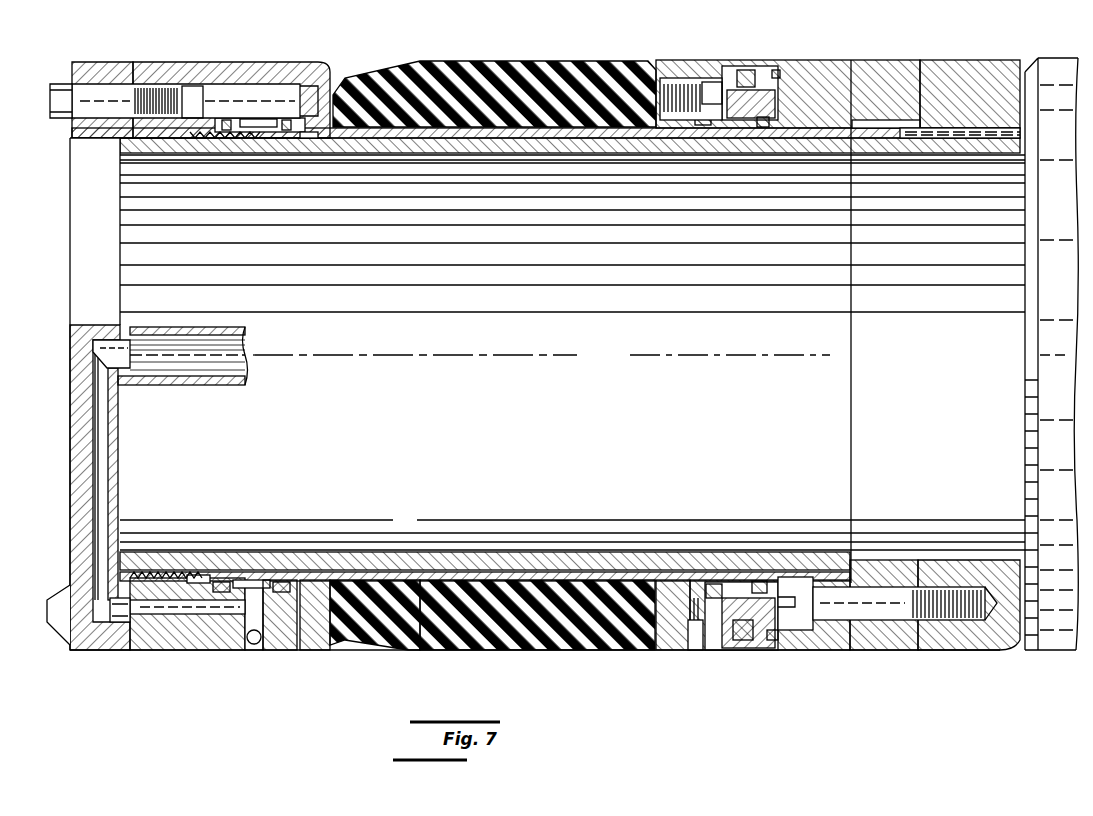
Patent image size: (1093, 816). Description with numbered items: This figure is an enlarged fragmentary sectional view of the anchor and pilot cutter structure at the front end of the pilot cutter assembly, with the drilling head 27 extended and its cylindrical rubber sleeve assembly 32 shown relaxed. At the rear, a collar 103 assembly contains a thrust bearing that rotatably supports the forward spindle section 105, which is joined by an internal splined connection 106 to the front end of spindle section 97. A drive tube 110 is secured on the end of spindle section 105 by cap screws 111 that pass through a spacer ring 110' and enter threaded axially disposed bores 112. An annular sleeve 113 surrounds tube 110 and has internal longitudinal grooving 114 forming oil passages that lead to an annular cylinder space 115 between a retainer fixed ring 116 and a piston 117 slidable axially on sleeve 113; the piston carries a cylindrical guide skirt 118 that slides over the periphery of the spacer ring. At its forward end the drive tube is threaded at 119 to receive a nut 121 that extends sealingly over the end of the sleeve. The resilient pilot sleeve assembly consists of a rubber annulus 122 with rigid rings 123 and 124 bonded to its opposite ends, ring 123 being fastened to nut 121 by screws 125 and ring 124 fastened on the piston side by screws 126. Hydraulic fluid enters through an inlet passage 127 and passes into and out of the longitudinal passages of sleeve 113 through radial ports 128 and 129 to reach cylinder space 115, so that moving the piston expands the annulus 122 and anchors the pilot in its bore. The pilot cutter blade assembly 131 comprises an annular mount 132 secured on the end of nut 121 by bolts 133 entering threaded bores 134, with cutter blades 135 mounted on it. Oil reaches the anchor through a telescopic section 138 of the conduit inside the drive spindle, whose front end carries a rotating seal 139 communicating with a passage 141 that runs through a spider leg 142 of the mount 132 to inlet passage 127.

The drilling head 27 is at (108, 655).
The cylindrical rubber sleeve assembly 32 is at (365, 642).
The spindle section 97 is at (886, 152).
The collar assembly 103 is at (1050, 650).
The forward spindle section 105 is at (960, 640).
The internal splined connection 106 is at (956, 138).
The drive tube 110 is at (765, 590).
The spacer ring 110' is at (793, 80).
The cap screw 111 is at (805, 590).
The threaded axially disposed bore 112 is at (940, 620).
The annular sleeve 113 is at (655, 578).
The internal longitudinal grooving 114 is at (620, 568).
The annular cylinder space 115 is at (716, 584).
The retainer fixed ring 116 is at (752, 640).
The piston 117 is at (695, 640).
The cylindrical guide skirt 118 is at (860, 640).
The threads 119 is at (162, 574).
The nut 121 is at (215, 640).
The rubber annulus 122 is at (550, 640).
The rigid ring 123 is at (310, 640).
The rigid ring 124 is at (672, 640).
The screws 125 is at (240, 100).
The screws 126 is at (690, 95).
The hydraulic fluid inlet passage 127 is at (150, 615).
The radial port 128 is at (268, 582).
The radial port 129 is at (762, 581).
The pilot cutter blade assembly 131 is at (82, 292).
The annular mount 132 is at (72, 130).
The bolts 133 is at (52, 103).
The threaded bores 134 is at (165, 88).
The cutter blades 135 is at (60, 598).
The telescopic section 138 is at (193, 330).
The rotating seal 139 is at (126, 341).
The passage 141 is at (112, 484).
The spider leg 142 is at (78, 205).